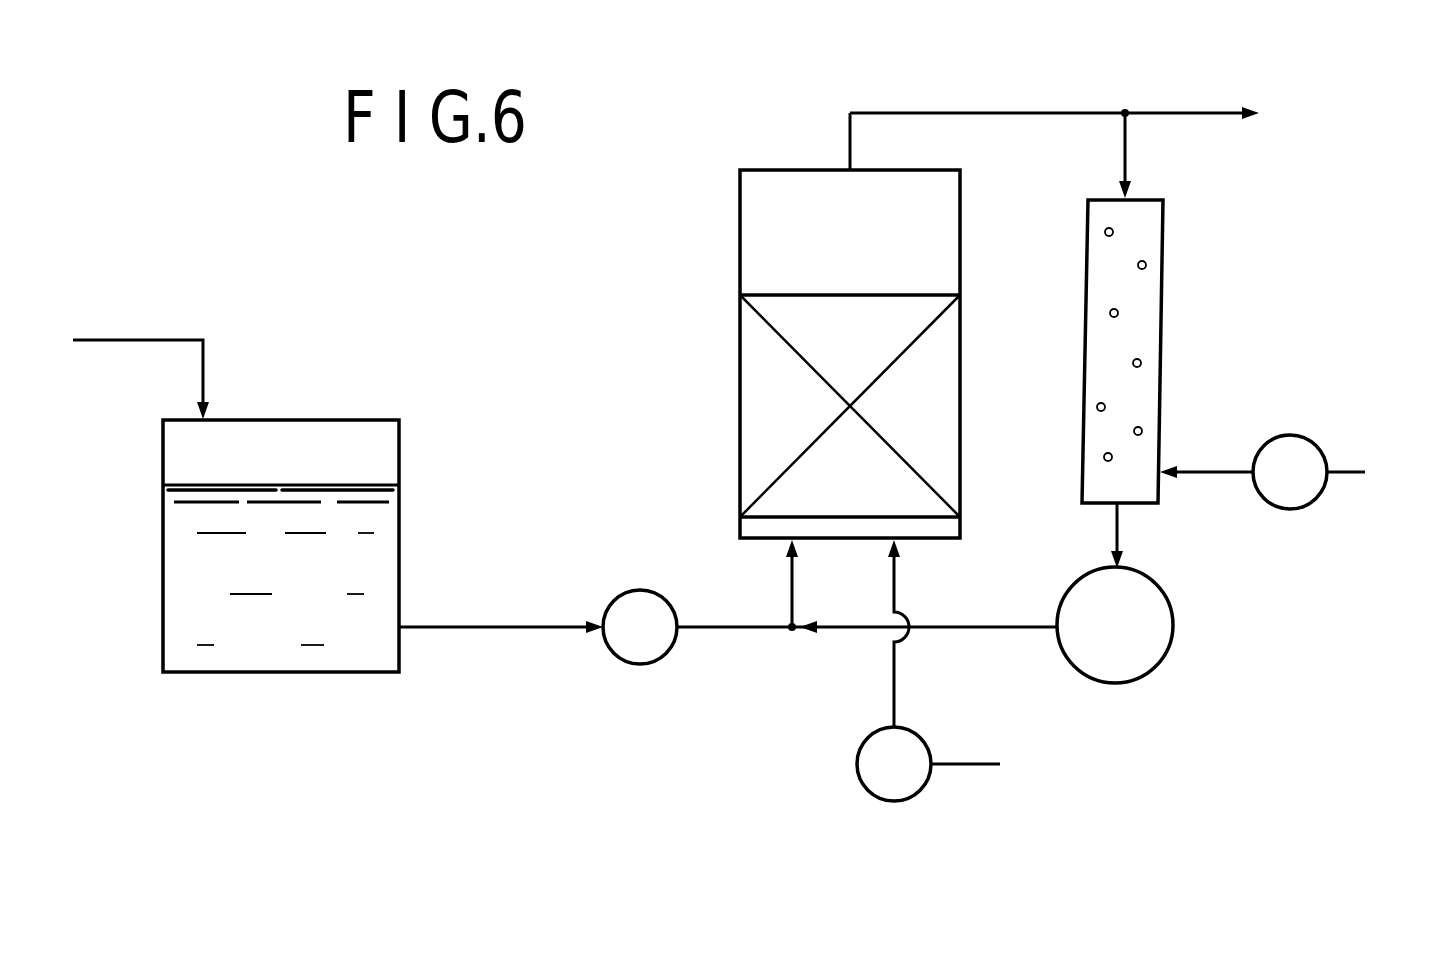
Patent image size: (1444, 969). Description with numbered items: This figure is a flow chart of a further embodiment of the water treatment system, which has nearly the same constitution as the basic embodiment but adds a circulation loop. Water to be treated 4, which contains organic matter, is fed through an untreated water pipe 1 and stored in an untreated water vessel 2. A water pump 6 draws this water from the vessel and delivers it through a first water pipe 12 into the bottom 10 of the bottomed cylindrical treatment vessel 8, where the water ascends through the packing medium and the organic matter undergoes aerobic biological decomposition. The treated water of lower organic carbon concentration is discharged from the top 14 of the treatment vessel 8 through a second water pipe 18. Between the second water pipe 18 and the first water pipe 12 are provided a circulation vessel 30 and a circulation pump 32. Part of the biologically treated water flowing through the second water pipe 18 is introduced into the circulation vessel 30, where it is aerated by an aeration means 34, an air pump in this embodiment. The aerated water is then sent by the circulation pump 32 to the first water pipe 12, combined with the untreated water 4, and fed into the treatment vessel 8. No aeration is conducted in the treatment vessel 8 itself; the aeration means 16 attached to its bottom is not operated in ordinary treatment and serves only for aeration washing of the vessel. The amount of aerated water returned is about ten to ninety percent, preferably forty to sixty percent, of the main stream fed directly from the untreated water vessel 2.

The untreated water pipe 1 is at (138, 340).
The untreated water vessel 2 is at (320, 418).
The water to be treated 4 is at (368, 562).
The water pump 6 is at (617, 599).
The treatment vessel 8 is at (738, 382).
The bottom 10 is at (763, 546).
The first water pipe 12 is at (752, 629).
The top 14 is at (793, 168).
The aeration means 16 is at (857, 761).
The second water pipe 18 is at (995, 110).
The circulation vessel 30 is at (1161, 323).
The circulation pump 32 is at (1170, 640).
The aeration means 34 is at (1283, 435).